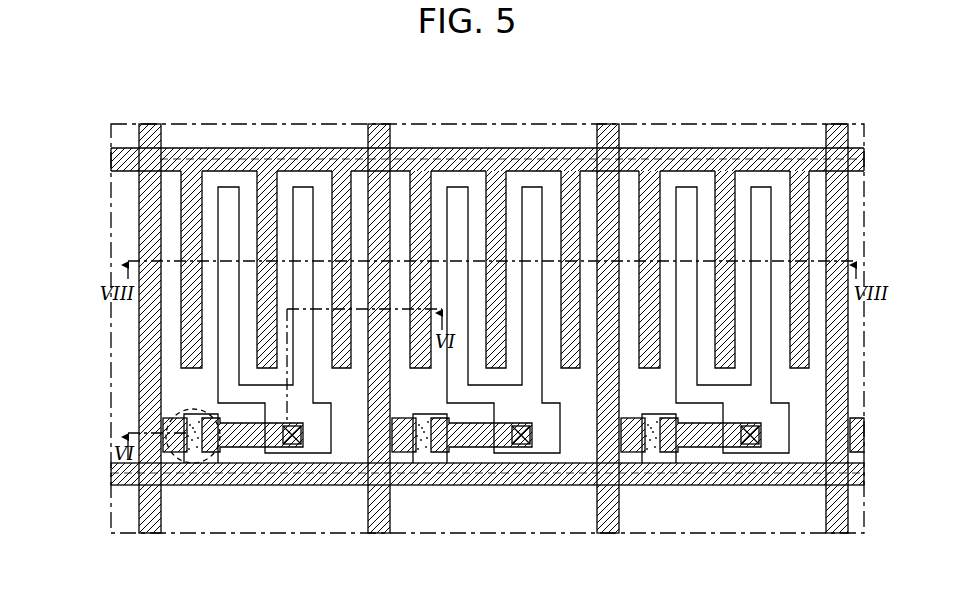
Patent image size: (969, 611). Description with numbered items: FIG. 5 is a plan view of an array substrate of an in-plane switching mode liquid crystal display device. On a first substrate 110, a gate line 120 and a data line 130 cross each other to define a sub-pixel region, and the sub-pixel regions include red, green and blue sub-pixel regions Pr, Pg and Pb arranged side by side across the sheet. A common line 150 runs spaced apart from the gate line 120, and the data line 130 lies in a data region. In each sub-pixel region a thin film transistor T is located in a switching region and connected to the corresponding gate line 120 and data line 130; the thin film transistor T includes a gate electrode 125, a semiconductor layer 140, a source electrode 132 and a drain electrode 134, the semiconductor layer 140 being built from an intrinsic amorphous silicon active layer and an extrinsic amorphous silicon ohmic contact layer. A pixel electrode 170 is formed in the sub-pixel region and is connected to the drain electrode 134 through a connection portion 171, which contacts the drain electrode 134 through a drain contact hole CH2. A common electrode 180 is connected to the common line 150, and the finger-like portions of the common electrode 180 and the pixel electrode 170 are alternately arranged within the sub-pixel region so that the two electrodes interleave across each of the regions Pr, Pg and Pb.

The first substrate 110 is at (827, 523).
The gate line 120 is at (540, 487).
The gate electrode 125 is at (201, 412).
The data line 130 is at (140, 330).
The source electrode 132 is at (168, 470).
The drain electrode 134 is at (257, 450).
The semiconductor layer 140 is at (193, 470).
The common line 150 is at (462, 148).
The pixel electrode 170 is at (303, 372).
The connection portion 171 is at (322, 428).
The common electrode 180 is at (341, 158).
The drain contact hole CH2 is at (292, 423).
The thin film transistor T is at (222, 478).
The red sub-pixel region Pr is at (210, 148).
The green sub-pixel region Pg is at (538, 148).
The blue sub-pixel region Pb is at (705, 148).